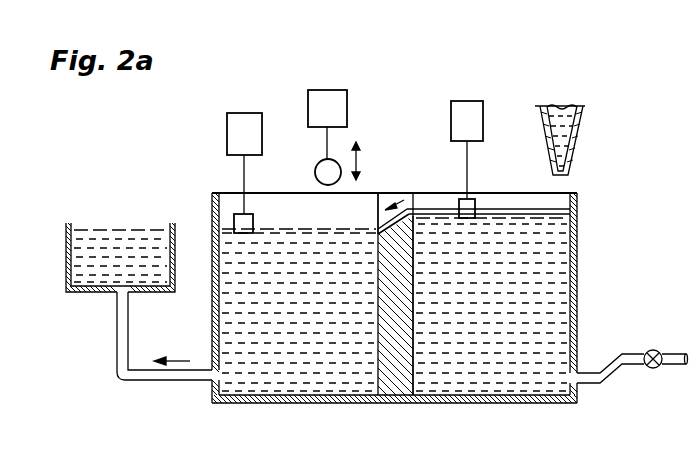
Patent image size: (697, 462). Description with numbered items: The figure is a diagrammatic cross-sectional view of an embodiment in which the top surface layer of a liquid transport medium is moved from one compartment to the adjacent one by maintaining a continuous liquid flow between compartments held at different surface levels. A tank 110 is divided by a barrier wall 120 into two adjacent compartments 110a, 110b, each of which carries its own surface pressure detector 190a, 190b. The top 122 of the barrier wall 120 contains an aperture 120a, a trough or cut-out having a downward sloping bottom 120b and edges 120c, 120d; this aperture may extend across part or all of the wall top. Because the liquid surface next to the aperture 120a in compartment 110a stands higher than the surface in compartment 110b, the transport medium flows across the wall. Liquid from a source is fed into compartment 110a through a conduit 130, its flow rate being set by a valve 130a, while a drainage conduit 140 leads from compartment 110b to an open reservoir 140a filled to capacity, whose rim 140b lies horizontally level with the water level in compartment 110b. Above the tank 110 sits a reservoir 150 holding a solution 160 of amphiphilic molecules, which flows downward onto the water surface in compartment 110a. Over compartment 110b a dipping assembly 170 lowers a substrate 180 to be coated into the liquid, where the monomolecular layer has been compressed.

The tank 110 is at (577, 235).
The compartment 110a is at (474, 379).
The compartment 110b is at (300, 381).
The barrier wall 120 is at (394, 384).
The aperture 120a is at (380, 221).
The downward sloping bottom 120b is at (400, 209).
The edge 120c is at (424, 218).
The edge 120d is at (370, 236).
The top 122 is at (385, 193).
The conduit 130 is at (602, 380).
The valve 130a is at (653, 349).
The drainage conduit 140 is at (117, 371).
The open reservoir 140a is at (88, 268).
The rim 140b is at (172, 222).
The reservoir 150 is at (580, 113).
The solution 160 is at (575, 137).
The dipping assembly 170 is at (343, 106).
The substrate 180 is at (315, 172).
The surface pressure detector 190a is at (470, 101).
The surface pressure detector 190b is at (227, 129).